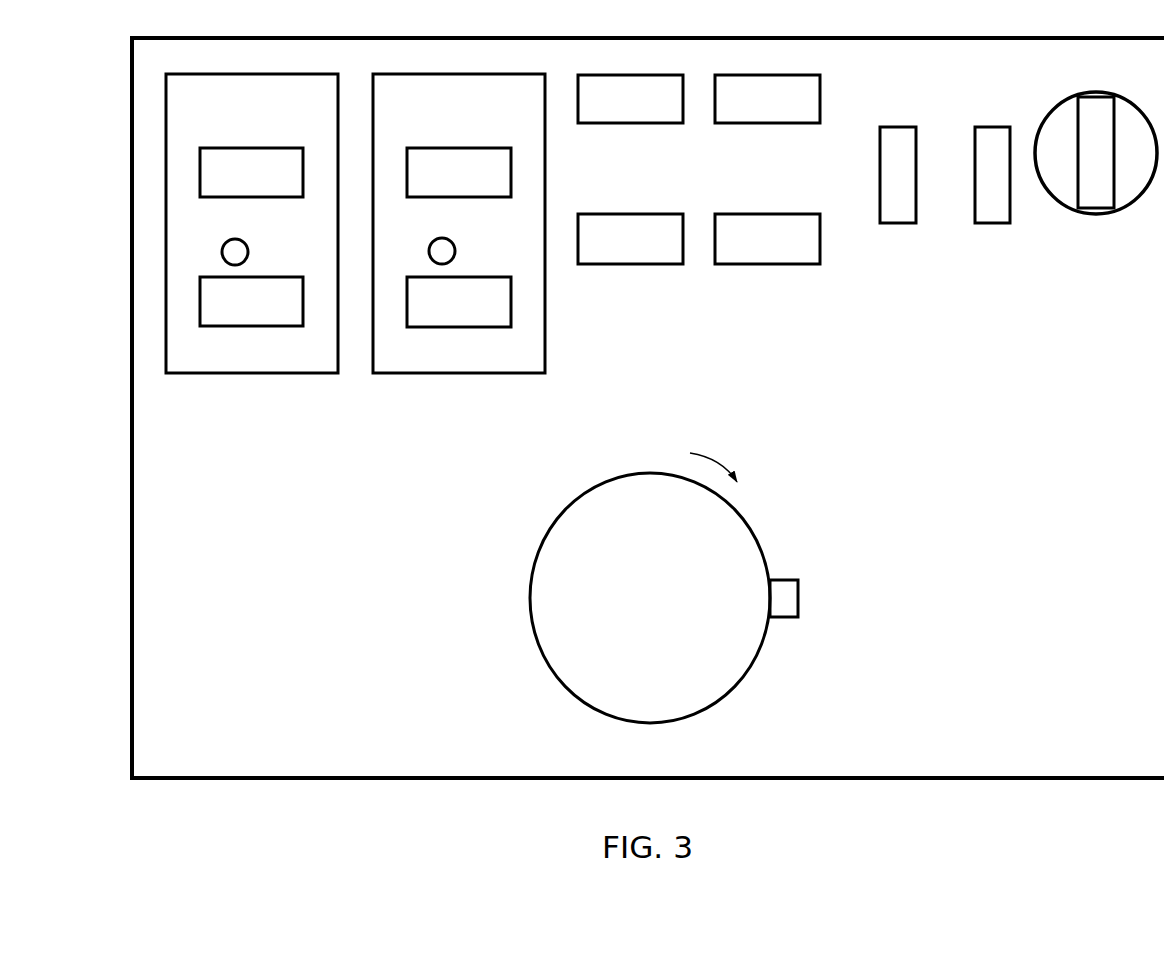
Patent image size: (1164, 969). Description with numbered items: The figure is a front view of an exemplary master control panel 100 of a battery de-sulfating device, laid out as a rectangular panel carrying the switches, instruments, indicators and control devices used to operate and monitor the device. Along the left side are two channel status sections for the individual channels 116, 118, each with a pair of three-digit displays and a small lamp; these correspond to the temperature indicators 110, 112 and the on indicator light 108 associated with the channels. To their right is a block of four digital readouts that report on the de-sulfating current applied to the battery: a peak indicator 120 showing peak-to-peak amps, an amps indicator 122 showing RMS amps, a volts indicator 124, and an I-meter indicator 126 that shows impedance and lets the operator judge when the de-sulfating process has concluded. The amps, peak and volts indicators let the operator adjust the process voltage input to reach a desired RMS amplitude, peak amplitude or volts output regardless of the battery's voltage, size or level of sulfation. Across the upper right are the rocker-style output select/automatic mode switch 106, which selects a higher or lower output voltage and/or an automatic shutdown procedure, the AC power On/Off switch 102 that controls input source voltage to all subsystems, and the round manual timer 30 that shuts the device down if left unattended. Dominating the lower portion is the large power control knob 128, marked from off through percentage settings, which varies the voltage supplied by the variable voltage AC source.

The master control panel 100 is at (1005, 782).
The channel 116 is at (209, 252).
The channel 118 is at (466, 386).
The temperature indicator 110 is at (197, 173).
The on indicator light 108 is at (218, 251).
The temperature indicator 112 is at (197, 302).
The peak indicator 120 is at (638, 164).
The amps indicator 122 is at (768, 164).
The volts indicator 124 is at (652, 308).
The I-meter indicator 126 is at (777, 308).
The output select/automatic mode switch 106 is at (888, 340).
The AC power On/Off switch 102 is at (995, 333).
The manual timer 30 is at (1095, 341).
The power control knob 128 is at (838, 505).